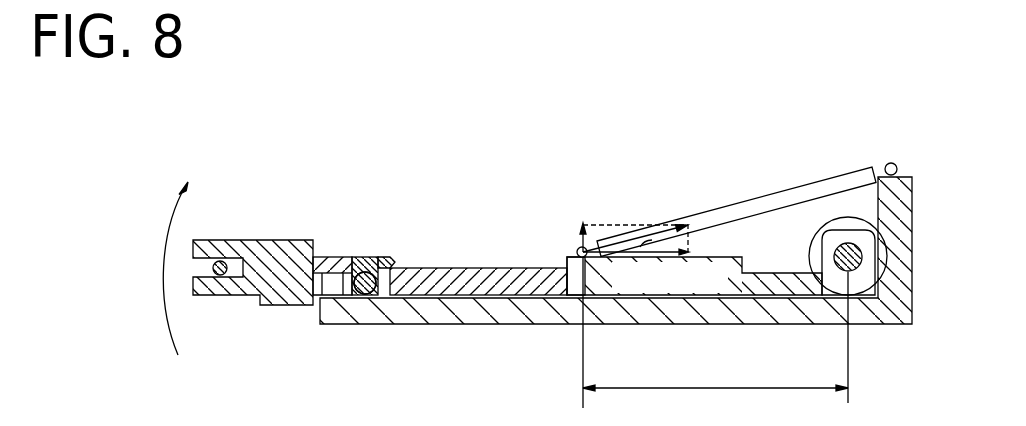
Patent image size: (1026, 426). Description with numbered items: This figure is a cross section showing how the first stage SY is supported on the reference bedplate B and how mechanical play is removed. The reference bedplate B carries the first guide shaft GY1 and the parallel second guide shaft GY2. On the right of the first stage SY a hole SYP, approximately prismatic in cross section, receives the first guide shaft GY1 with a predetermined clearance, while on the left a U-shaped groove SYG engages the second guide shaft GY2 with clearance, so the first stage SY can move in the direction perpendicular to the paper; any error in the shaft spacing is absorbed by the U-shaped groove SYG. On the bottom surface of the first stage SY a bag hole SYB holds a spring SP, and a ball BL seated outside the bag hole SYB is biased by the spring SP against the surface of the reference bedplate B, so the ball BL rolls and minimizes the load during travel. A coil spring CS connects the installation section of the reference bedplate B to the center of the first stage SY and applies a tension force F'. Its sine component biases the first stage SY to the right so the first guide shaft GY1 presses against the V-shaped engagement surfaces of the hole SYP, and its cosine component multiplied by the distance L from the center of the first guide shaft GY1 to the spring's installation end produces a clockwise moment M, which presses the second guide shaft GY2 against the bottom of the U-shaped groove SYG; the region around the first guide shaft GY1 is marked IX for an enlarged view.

The U-shaped groove SYG is at (192, 262).
The bag hole SYB is at (356, 257).
The spring SP is at (372, 257).
The first stage SY is at (447, 268).
The ball BL is at (363, 295).
The second guide shaft GY2 is at (233, 277).
The first guide shaft GY1 is at (850, 272).
The hole SYP is at (848, 230).
The coil spring CS is at (752, 201).
The detail region IX is at (807, 247).
The reference bedplate B is at (626, 325).
The distance L is at (715, 332).
The clockwise moment M is at (156, 268).
The tension force F' is at (612, 209).